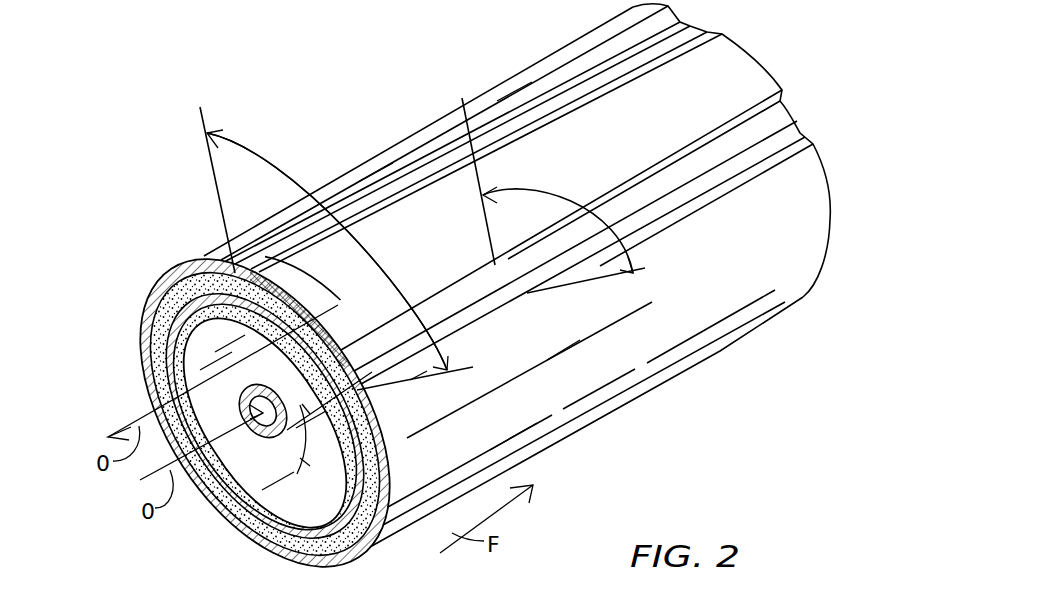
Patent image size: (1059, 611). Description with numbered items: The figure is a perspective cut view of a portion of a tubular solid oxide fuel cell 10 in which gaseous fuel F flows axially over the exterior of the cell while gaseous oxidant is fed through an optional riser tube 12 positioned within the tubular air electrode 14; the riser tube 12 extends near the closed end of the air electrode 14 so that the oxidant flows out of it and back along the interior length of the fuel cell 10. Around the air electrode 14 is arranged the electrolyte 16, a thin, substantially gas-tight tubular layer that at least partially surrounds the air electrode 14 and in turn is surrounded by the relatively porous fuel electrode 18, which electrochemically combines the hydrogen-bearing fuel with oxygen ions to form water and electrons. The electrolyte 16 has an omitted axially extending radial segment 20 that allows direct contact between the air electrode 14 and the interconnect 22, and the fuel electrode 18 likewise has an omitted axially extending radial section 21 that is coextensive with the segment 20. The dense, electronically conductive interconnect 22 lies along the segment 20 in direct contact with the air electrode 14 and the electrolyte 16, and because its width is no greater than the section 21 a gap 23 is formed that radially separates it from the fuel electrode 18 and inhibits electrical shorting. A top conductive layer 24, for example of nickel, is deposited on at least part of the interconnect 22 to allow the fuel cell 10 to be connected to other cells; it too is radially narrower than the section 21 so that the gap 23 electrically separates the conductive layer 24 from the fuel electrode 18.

The tubular solid oxide fuel cell 10 is at (745, 262).
The riser tube 12 is at (247, 534).
The air electrode 14 is at (168, 331).
The electrolyte 16 is at (152, 291).
The fuel electrode 18 is at (148, 367).
The omitted axially extending radial segment 20 is at (358, 272).
The omitted axially extending radial section 21 is at (358, 272).
The interconnect 22 is at (308, 322).
The gap 23 is at (555, 192).
The conductive layer 24 is at (297, 292).